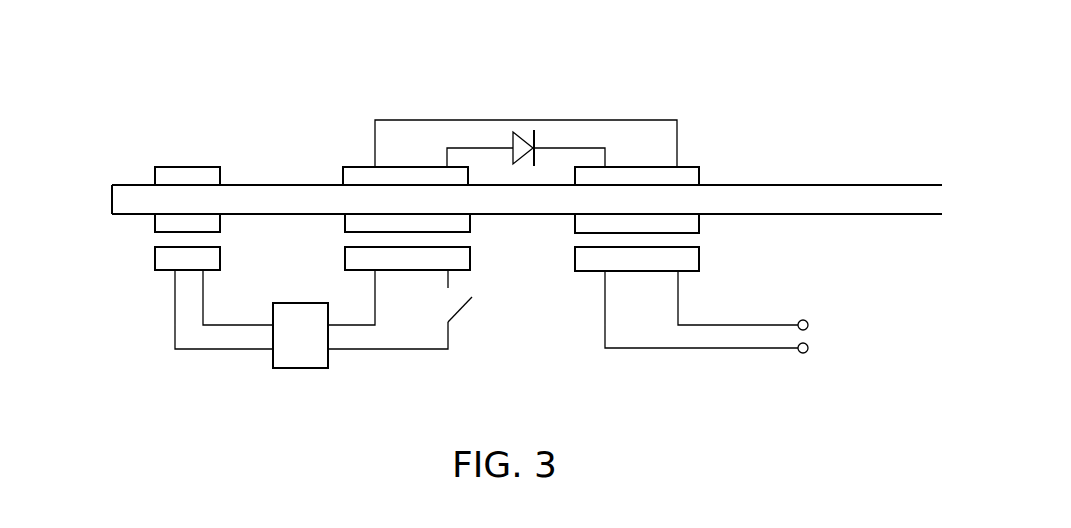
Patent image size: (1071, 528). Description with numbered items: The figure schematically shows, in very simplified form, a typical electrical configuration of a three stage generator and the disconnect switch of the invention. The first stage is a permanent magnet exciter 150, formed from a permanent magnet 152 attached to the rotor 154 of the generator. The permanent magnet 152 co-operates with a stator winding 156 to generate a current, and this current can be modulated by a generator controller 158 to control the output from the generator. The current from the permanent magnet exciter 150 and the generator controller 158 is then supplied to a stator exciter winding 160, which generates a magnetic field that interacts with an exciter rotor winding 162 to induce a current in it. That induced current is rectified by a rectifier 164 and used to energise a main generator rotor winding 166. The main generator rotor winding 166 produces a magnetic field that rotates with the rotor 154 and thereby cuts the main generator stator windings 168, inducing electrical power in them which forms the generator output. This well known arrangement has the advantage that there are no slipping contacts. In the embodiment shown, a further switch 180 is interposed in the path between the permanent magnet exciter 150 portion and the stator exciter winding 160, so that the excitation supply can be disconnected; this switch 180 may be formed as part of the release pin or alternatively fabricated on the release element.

The permanent magnet exciter 150 is at (202, 107).
The permanent magnet 152 is at (217, 167).
The rotor 154 is at (112, 203).
The stator winding 156 is at (158, 270).
The generator controller 158 is at (293, 370).
The stator exciter winding 160 is at (470, 260).
The exciter rotor winding 162 is at (352, 167).
The rectifier 164 is at (522, 132).
The main generator rotor winding 166 is at (700, 172).
The main generator stator windings 168 is at (700, 260).
The switch 180 is at (457, 313).